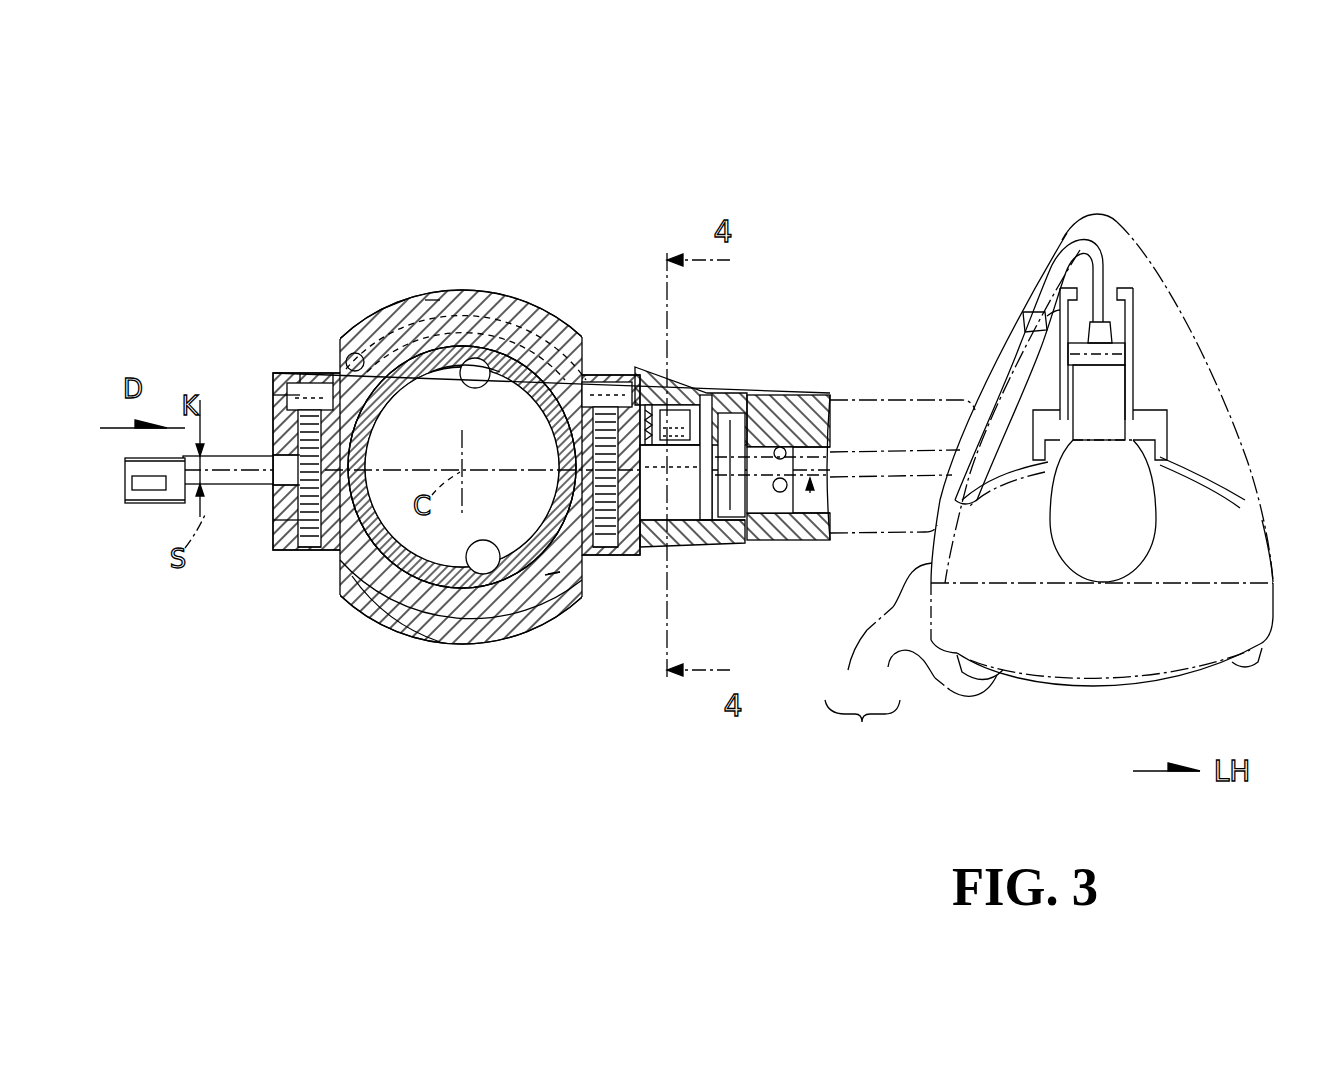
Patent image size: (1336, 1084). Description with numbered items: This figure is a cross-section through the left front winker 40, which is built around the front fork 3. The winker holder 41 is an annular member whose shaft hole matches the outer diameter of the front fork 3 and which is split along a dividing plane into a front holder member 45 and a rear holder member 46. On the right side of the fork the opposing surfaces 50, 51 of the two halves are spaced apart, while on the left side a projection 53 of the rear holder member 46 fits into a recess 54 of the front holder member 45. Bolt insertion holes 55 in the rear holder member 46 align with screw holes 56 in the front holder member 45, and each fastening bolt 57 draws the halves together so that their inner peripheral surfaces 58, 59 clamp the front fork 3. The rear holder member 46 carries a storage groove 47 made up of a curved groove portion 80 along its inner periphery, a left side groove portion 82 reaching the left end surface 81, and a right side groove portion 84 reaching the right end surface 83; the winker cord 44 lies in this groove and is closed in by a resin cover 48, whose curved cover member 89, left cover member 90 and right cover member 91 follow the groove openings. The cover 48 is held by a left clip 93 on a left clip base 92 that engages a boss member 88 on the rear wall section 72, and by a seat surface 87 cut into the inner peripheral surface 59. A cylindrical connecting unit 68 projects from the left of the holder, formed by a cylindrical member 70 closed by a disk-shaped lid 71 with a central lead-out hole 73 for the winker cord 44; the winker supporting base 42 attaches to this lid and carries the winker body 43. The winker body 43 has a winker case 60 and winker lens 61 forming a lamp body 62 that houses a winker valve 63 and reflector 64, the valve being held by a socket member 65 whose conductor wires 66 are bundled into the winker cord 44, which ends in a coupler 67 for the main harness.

The front fork 3 is at (400, 628).
The left front winker 40 is at (790, 286).
The winker holder 41 is at (546, 280).
The winker supporting base 42 is at (830, 393).
The winker body 43 is at (1063, 224).
The winker cord 44 is at (810, 542).
The front holder member 45 is at (526, 643).
The rear holder member 46 is at (507, 296).
The storage groove 47 is at (393, 300).
The cover 48 is at (462, 380).
The opposing surface 50 is at (283, 478).
The opposing surface 51 is at (272, 440).
The projection 53 is at (560, 572).
The recess 54 is at (560, 572).
The bolt insertion hole 55 is at (323, 375).
The screw hole 56 is at (312, 550).
The fastening bolt 57 is at (300, 380).
The inner peripheral surface 58 is at (483, 575).
The inner peripheral surface 59 is at (498, 290).
The winker case 60 is at (876, 631).
The winker lens 61 is at (931, 674).
The lamp body 62 is at (862, 722).
The winker valve 63 is at (1042, 503).
The reflector 64 is at (986, 505).
The socket member 65 is at (1120, 336).
The conductor wires 66 is at (1045, 300).
The coupler 67 is at (153, 503).
The connecting unit 68 is at (735, 540).
The cylindrical member 70 is at (705, 543).
The disk-shaped lid 71 is at (772, 447).
The rear wall section 72 is at (695, 393).
The lead-out hole 73 is at (745, 518).
The curved groove portion 80 is at (432, 295).
The left end surface 81 is at (652, 403).
The left side groove portion 82 is at (642, 368).
The right end surface 83 is at (278, 450).
The right side groove portion 84 is at (263, 400).
The seat surface 87 is at (318, 372).
The boss member 88 is at (706, 420).
The curved cover member 89 is at (468, 375).
The left cover member 90 is at (648, 530).
The right cover member 91 is at (262, 522).
The left clip base 92 is at (683, 532).
The left clip 93 is at (674, 410).